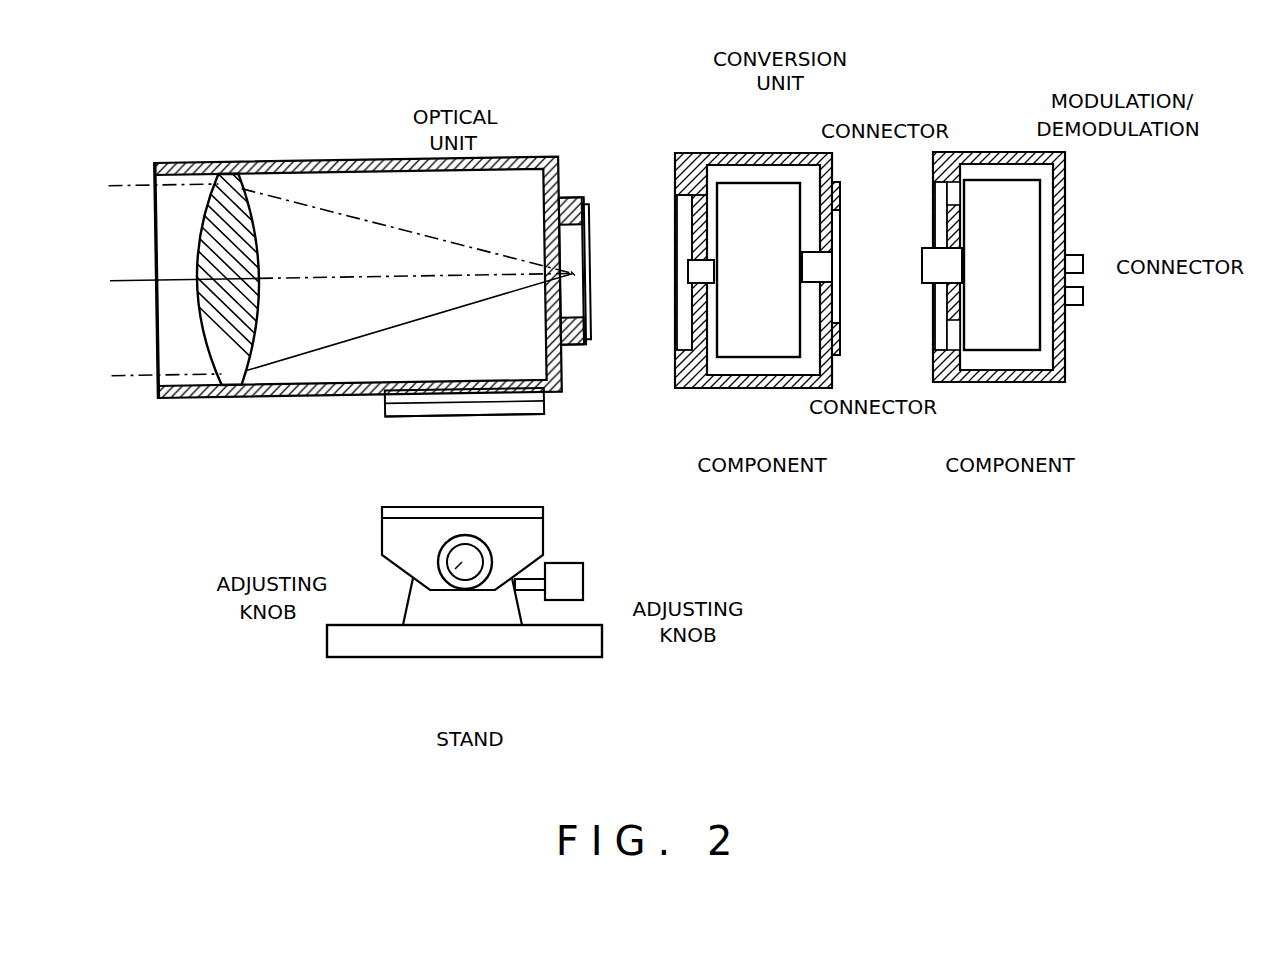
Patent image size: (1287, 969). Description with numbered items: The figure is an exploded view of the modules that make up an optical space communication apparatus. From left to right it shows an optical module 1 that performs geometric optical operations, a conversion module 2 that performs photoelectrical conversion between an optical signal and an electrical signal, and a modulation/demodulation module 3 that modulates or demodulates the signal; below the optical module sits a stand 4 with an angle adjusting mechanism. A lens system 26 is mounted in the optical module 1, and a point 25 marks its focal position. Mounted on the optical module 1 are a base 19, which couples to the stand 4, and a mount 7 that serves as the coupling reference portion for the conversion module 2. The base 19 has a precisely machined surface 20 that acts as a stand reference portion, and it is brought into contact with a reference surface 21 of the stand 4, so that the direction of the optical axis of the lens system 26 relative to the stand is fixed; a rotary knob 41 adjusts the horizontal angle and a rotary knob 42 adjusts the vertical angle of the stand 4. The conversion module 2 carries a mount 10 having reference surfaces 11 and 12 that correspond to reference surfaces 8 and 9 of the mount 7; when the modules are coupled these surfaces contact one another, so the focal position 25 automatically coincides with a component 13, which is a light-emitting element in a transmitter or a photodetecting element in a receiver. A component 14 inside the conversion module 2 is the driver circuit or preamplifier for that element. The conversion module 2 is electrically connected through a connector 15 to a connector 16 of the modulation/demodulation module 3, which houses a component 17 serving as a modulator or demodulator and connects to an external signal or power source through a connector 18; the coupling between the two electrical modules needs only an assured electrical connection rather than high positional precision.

The optical module 1 is at (391, 250).
The conversion module 2 is at (755, 273).
The modulation/demodulation module 3 is at (1004, 273).
The stand 4 is at (478, 657).
The mount 7 is at (583, 200).
The reference surface 8 is at (568, 202).
The reference surface 9 is at (588, 214).
The mount 10 is at (678, 190).
The reference surface 11 is at (678, 205).
The reference surface 12 is at (680, 235).
The component 13 is at (678, 270).
The component 14 is at (762, 342).
The connector 15 is at (879, 147).
The connector 16 is at (937, 263).
The component 17 is at (1005, 342).
The connector 18 is at (1083, 262).
The base 19 is at (398, 414).
The surface 20 is at (527, 419).
The reference surface 21 is at (473, 507).
The focal position 25 is at (573, 280).
The lens system 26 is at (250, 249).
The rotary knob 41 is at (447, 559).
The rotary knob 42 is at (583, 583).